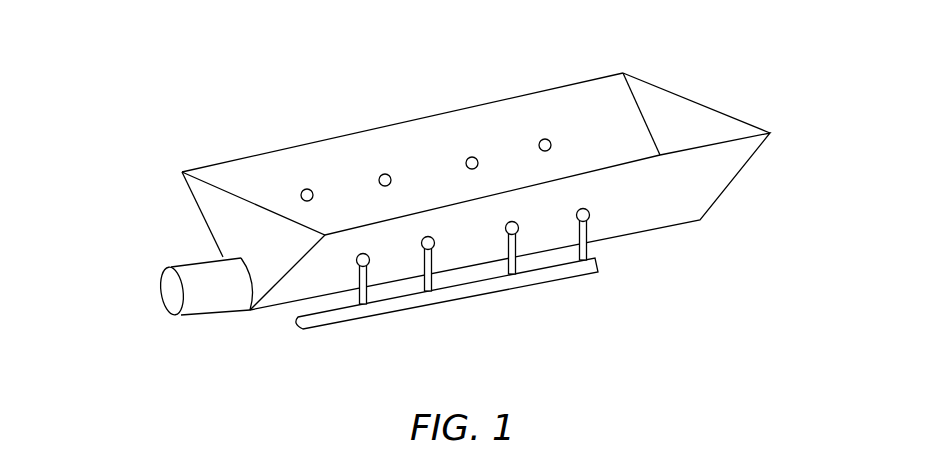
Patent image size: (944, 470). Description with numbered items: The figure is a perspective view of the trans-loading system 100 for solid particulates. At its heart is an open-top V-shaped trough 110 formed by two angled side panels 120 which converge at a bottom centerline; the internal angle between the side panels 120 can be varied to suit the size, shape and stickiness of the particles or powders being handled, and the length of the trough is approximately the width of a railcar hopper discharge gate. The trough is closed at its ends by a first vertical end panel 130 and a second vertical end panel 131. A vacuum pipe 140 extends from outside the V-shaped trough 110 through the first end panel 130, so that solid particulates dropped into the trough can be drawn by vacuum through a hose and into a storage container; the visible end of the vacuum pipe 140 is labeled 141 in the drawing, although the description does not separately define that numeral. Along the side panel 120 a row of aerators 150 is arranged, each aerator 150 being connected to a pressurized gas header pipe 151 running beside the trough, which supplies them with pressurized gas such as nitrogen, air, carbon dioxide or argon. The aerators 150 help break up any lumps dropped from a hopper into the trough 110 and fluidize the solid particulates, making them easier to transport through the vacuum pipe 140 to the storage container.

The trans-loading system 100 is at (680, 52).
The V-shaped trough 110 is at (232, 160).
The angled side panel 120 is at (485, 130).
The first vertical end panel 130 is at (233, 225).
The second vertical end panel 131 is at (703, 128).
The vacuum pipe 140 is at (223, 293).
The tube end cap 141 is at (182, 318).
The aerators 150 is at (311, 190).
The pressurized gas header pipe 151 is at (488, 290).